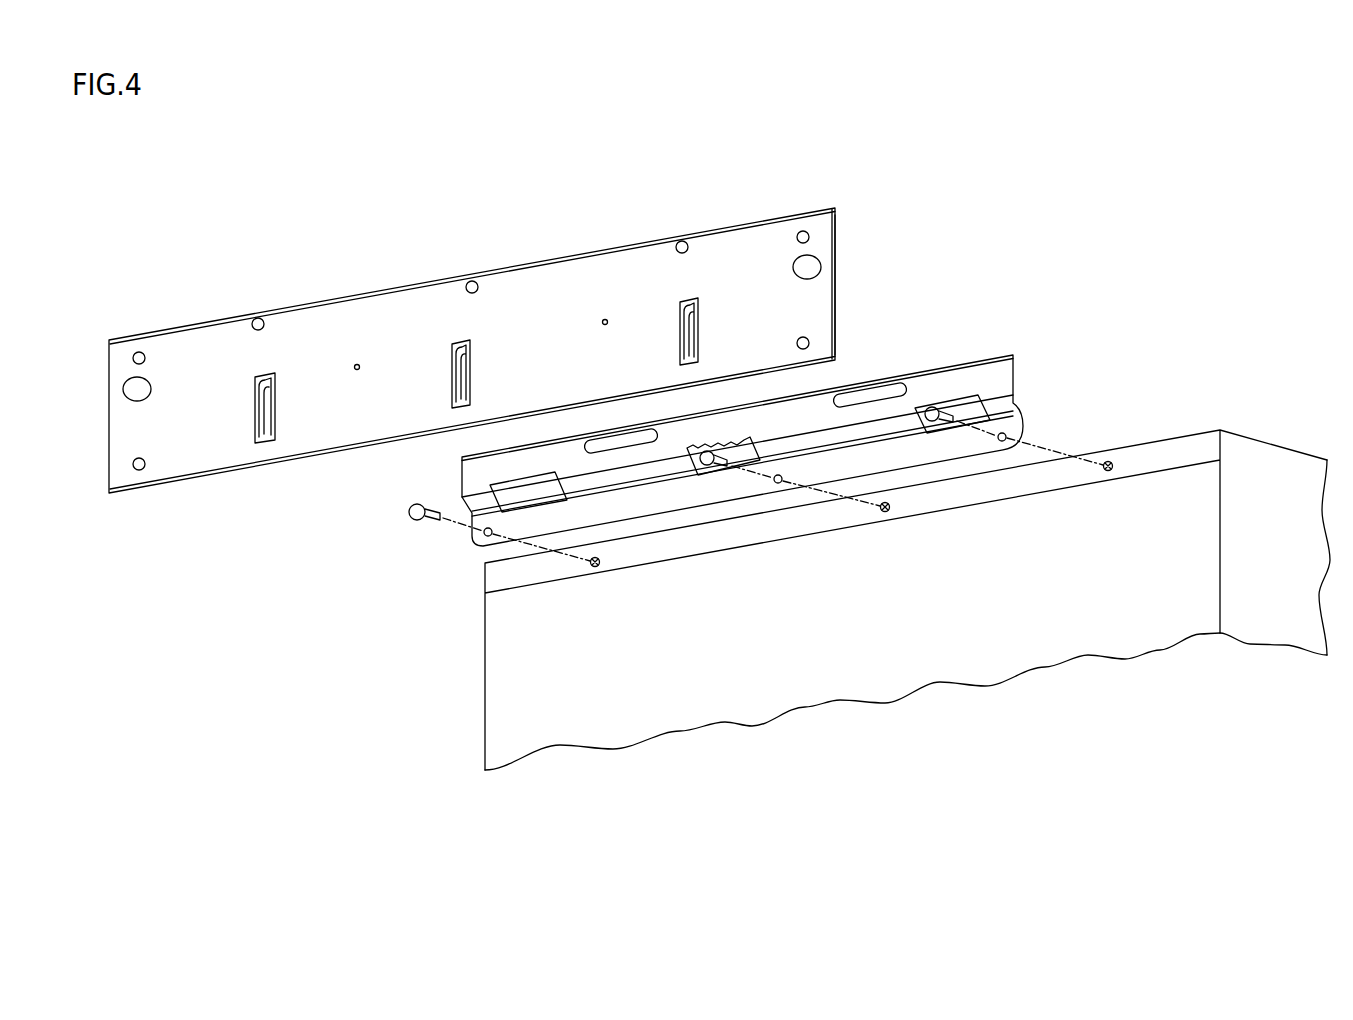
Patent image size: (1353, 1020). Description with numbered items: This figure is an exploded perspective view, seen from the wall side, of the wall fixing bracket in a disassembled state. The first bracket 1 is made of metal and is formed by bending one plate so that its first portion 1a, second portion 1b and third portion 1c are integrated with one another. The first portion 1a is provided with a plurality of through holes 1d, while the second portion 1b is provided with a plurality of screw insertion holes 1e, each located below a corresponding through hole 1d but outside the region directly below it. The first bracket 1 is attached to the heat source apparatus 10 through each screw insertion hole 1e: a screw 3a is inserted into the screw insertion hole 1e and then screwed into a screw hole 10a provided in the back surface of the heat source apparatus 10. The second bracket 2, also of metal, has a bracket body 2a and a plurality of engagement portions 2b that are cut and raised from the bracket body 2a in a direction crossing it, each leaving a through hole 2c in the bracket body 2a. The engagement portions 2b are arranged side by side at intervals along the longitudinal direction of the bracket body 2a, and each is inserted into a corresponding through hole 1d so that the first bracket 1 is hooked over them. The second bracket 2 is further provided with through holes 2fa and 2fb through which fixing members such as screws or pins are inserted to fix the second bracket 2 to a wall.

The first bracket 1 is at (999, 351).
The first portion 1a is at (1015, 369).
The second portion 1b is at (1022, 429).
The third portion 1c is at (1008, 407).
The through holes 1d is at (500, 486).
The screw insertion holes 1e is at (484, 533).
The second bracket 2 is at (823, 207).
The bracket body 2a is at (835, 301).
The engagement portions 2b is at (275, 395).
The through hole 2c is at (253, 392).
The through holes 2fa is at (141, 469).
The through holes 2fb is at (139, 352).
The screw 3a is at (409, 512).
The heat source apparatus 10 is at (1246, 427).
The screw hole 10a is at (595, 568).